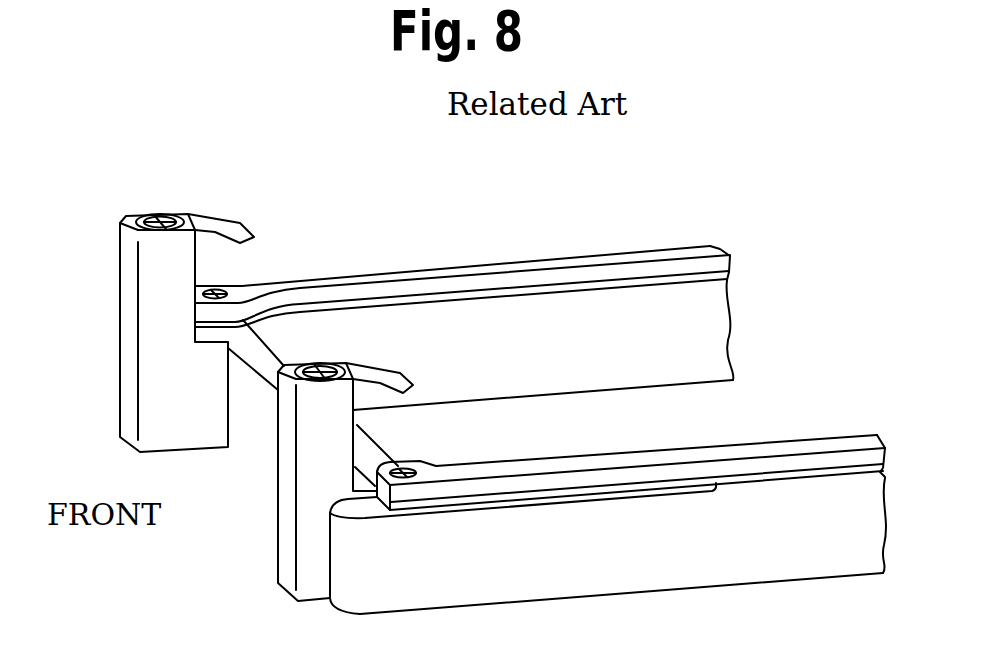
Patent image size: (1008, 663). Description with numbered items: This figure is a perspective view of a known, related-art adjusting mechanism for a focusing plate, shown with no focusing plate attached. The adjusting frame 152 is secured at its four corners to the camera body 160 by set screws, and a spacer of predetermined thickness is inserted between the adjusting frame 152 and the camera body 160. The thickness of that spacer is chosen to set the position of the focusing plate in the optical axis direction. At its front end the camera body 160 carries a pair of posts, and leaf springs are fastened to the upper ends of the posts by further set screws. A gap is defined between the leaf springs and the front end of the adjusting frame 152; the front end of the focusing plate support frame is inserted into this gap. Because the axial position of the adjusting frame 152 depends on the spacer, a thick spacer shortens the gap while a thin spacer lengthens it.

The adjusting frame 152 is at (541, 258).
The camera body 160 is at (610, 580).